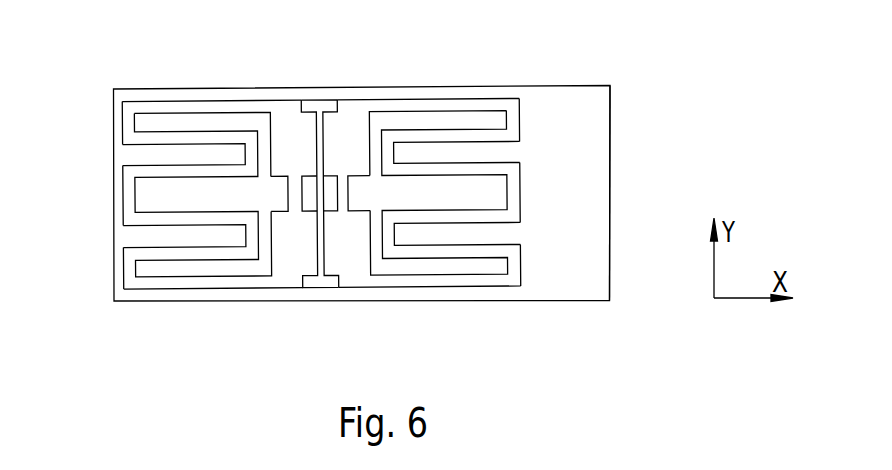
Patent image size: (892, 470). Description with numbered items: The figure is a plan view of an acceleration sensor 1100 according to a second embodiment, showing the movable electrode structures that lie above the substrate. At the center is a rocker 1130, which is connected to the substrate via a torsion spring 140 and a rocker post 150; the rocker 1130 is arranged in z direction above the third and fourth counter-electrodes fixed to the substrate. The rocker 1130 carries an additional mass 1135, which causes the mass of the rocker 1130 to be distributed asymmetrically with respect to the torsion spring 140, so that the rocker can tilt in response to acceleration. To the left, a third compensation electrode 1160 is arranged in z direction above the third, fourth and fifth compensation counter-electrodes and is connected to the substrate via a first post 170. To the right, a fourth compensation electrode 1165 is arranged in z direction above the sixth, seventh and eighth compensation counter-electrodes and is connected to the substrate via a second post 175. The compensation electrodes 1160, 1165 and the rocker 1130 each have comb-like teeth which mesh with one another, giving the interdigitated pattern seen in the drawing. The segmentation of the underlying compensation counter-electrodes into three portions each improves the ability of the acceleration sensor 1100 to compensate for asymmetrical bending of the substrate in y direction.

The acceleration sensor 1100 is at (663, 84).
The rocker 1130 is at (161, 94).
The additional mass 1135 is at (583, 109).
The third compensation electrode 1160 is at (157, 198).
The fourth compensation electrode 1165 is at (455, 120).
The torsion spring 140 is at (318, 135).
The rocker post 150 is at (322, 198).
The first post 170 is at (278, 198).
The second post 175 is at (360, 188).